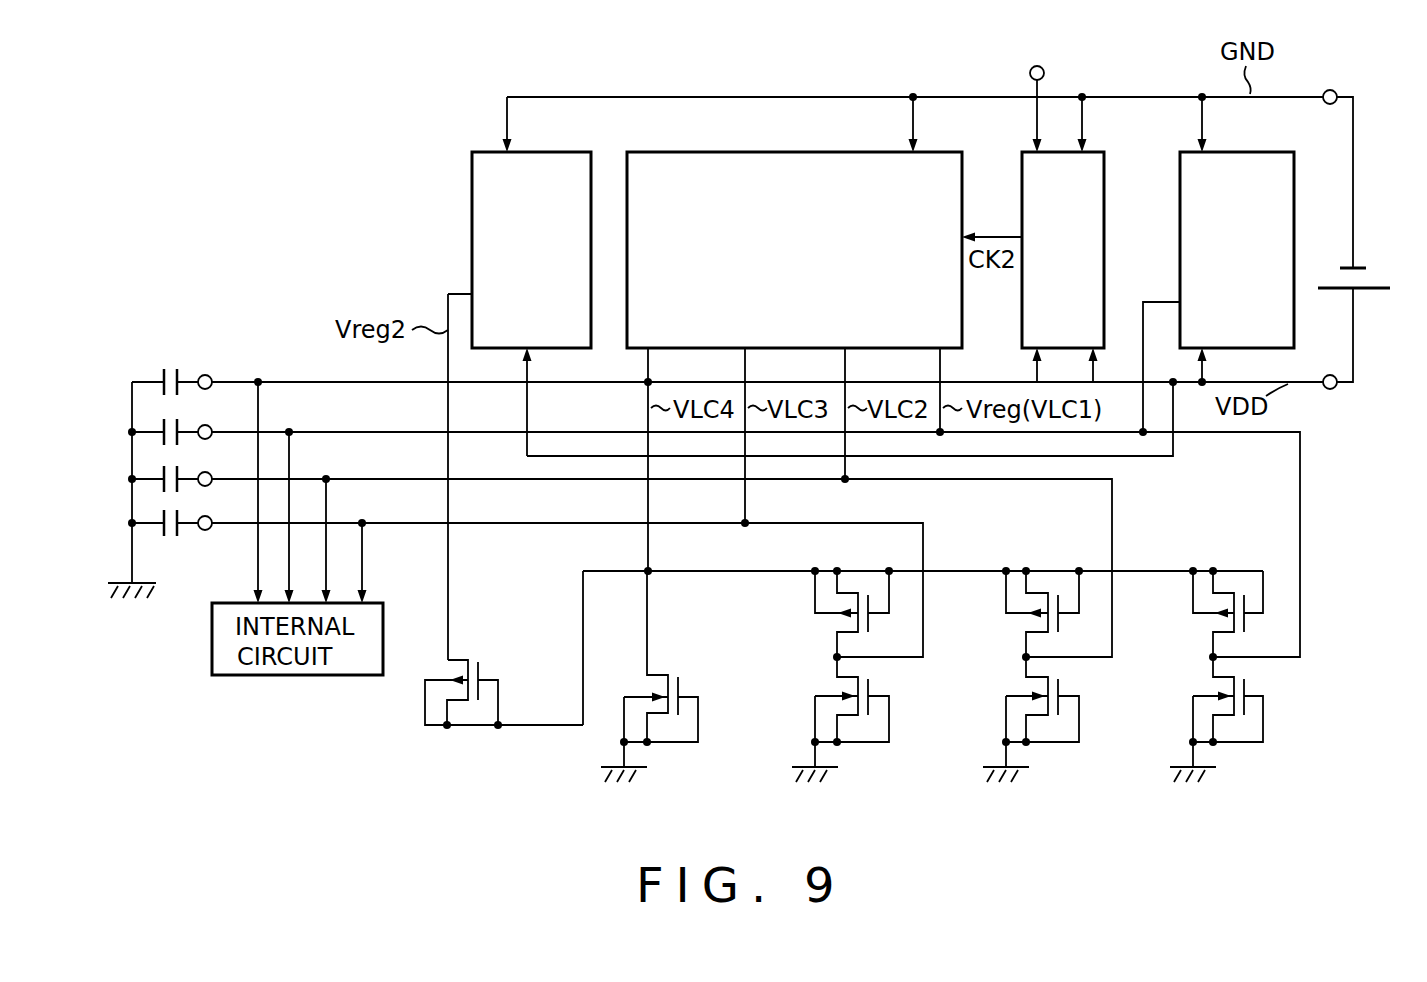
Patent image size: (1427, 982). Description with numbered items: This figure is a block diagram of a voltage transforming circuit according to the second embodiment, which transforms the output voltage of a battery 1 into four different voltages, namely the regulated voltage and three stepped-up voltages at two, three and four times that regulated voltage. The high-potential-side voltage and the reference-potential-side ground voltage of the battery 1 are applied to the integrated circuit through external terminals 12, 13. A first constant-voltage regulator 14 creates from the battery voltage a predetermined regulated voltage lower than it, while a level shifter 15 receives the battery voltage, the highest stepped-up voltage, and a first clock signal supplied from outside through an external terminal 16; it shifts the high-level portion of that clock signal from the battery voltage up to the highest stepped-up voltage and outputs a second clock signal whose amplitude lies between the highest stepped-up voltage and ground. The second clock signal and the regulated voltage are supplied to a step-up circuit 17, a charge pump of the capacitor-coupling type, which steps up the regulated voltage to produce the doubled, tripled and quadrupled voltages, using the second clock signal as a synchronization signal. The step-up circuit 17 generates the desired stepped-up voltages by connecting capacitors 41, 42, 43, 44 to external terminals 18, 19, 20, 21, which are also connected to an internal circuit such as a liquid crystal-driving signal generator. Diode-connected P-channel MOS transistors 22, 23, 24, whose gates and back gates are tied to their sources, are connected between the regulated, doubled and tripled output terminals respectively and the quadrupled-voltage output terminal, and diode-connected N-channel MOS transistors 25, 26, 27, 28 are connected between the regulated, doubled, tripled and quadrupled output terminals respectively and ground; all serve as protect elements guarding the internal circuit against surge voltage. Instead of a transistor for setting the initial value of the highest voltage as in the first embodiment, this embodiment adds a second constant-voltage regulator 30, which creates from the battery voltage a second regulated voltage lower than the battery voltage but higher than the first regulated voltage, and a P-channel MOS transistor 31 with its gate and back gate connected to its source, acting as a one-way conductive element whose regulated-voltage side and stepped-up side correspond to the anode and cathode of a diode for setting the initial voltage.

The battery 1 is at (1385, 275).
The external terminal 12 is at (1336, 389).
The external terminal 13 is at (1336, 92).
The first constant-voltage regulator 14 is at (1267, 152).
The level shifter 15 is at (1104, 247).
The external terminal 16 is at (1045, 73).
The step-up circuit 17 is at (788, 152).
The external terminal 18 is at (210, 378).
The external terminal 19 is at (210, 427).
The external terminal 20 is at (211, 474).
The external terminal 21 is at (211, 519).
The P-channel MOS transistor 22 is at (1250, 622).
The P-channel MOS transistor 23 is at (1016, 622).
The P-channel MOS transistor 24 is at (821, 622).
The N-channel MOS transistor 25 is at (1268, 700).
The N-channel MOS transistor 26 is at (1002, 695).
The N-channel MOS transistor 27 is at (810, 695).
The N-channel MOS transistor 28 is at (706, 685).
The second constant-voltage regulator 30 is at (528, 152).
The P-channel MOS transistor 31 is at (420, 700).
The capacitor 41 is at (156, 373).
The capacitor 42 is at (150, 424).
The capacitor 43 is at (150, 469).
The capacitor 44 is at (150, 516).